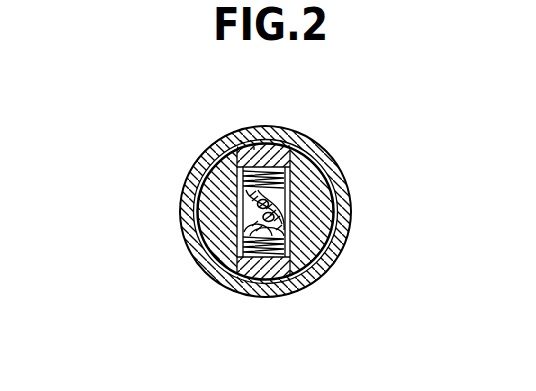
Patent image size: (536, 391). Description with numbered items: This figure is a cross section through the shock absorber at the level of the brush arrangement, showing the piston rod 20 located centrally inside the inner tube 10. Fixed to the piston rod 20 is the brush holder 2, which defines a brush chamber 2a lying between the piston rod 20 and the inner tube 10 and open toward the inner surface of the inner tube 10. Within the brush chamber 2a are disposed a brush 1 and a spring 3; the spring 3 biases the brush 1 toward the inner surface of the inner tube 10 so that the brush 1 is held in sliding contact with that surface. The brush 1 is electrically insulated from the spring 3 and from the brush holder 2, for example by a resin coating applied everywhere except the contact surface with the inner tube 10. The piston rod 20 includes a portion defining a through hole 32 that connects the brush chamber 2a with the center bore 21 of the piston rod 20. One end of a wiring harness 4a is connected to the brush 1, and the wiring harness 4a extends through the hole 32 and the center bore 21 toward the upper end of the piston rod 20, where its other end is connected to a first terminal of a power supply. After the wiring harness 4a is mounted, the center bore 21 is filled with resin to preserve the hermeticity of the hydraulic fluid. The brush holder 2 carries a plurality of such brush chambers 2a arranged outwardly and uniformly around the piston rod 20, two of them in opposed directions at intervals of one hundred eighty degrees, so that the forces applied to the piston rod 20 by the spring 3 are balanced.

The brush 1 is at (254, 147).
The brush holder 2 is at (312, 236).
The brush chamber 2a is at (207, 162).
The spring 3 is at (289, 145).
The wiring harness 4a is at (302, 183).
The inner tube 10 is at (352, 207).
The piston rod 20 is at (245, 203).
The center bore 21 is at (250, 212).
The through hole 32 is at (248, 250).